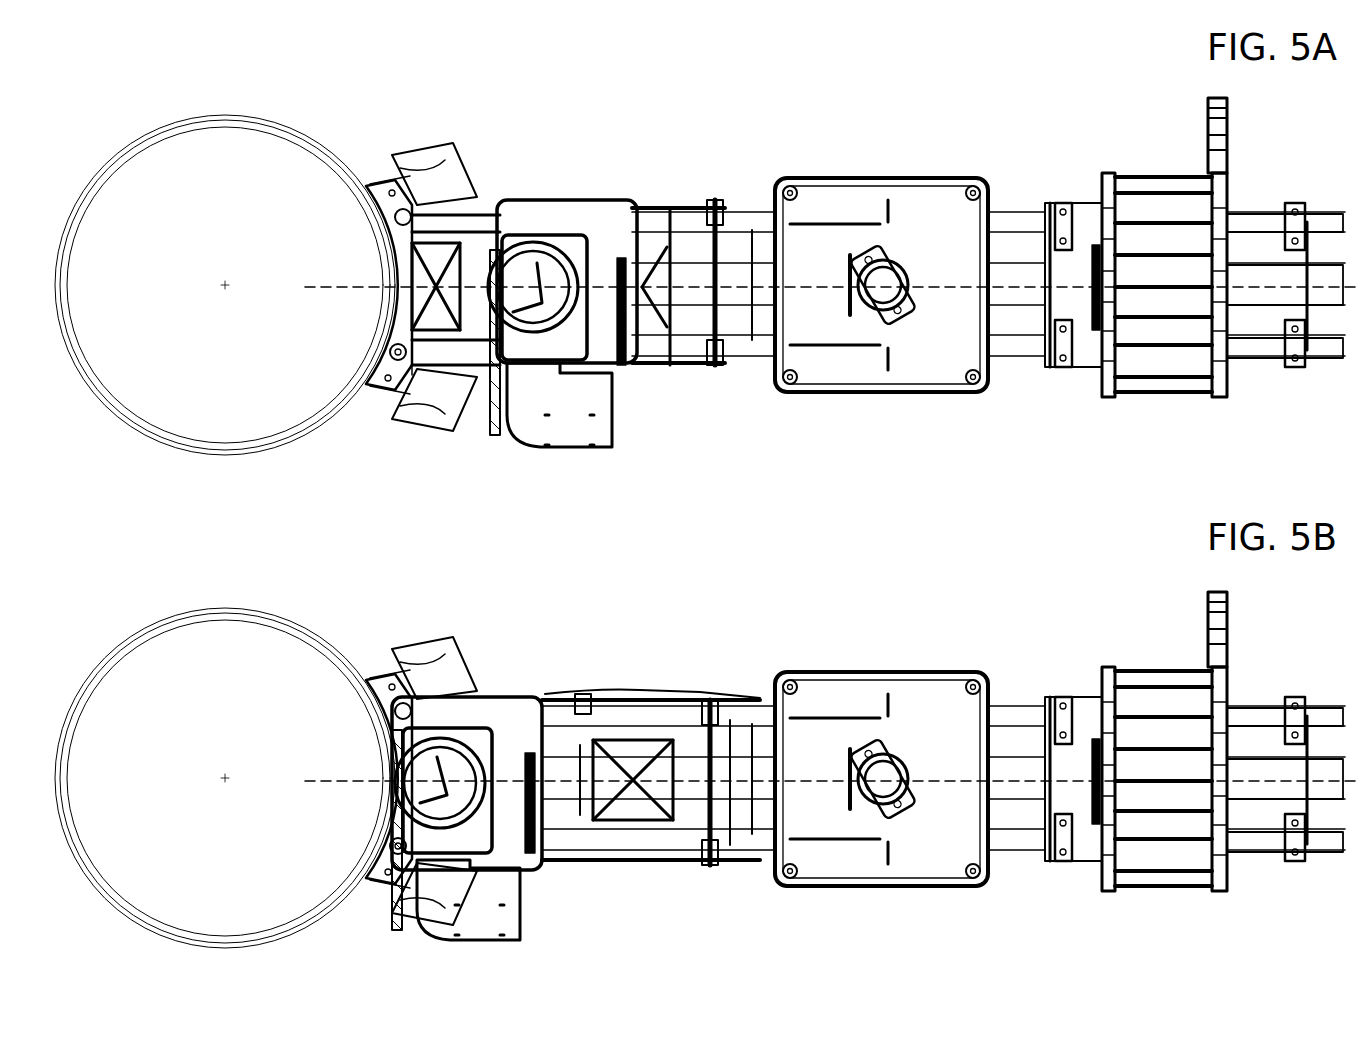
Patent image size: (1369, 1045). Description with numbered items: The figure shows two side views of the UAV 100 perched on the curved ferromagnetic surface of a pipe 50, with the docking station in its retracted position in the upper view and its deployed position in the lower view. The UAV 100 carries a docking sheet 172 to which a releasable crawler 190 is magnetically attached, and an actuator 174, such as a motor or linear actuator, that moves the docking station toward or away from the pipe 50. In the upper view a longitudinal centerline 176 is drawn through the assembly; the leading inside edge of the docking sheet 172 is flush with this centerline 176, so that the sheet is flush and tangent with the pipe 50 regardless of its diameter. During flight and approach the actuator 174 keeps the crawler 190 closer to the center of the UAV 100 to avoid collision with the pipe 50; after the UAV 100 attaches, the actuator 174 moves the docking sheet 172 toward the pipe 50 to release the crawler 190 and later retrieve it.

In FIG. 5B, the curved ferromagnetic surface 50 is at (212, 733).
In FIG. 5A, the UAV 100 is at (1027, 425).
In FIG. 5B, the UAV 100 is at (1047, 653).
In FIG. 5A, the docking sheet 172 is at (485, 418).
In FIG. 5B, the actuator 174 is at (573, 678).
In FIG. 5A, the centerline 176 is at (345, 300).
In FIG. 5A, the releasable crawler 190 is at (583, 423).